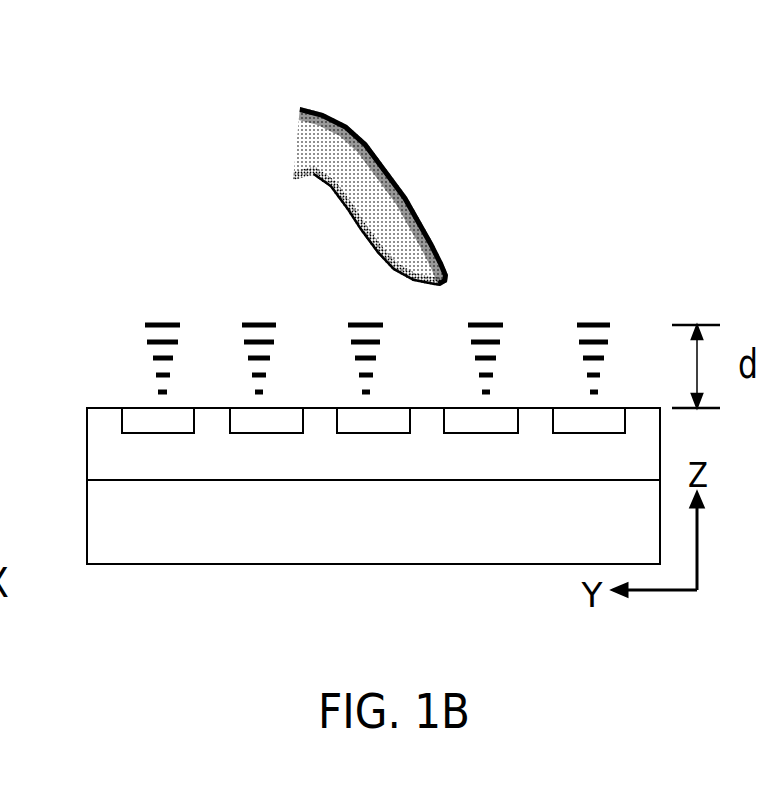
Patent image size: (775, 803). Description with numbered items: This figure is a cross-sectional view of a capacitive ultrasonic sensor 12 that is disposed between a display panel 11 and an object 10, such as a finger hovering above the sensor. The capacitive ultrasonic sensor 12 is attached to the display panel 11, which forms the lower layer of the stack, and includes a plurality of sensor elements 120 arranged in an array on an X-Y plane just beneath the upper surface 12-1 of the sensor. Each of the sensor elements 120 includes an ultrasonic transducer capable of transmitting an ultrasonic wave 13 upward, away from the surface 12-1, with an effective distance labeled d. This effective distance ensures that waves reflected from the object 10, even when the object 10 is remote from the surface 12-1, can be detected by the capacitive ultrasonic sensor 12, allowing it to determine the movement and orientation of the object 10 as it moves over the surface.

The object 10 is at (347, 123).
The ultrasonic waves 13 is at (132, 324).
The capacitive ultrasonic sensor 12 is at (87, 457).
The surface 12-1 is at (110, 408).
The sensor elements 120 is at (495, 433).
The display panel 11 is at (87, 530).